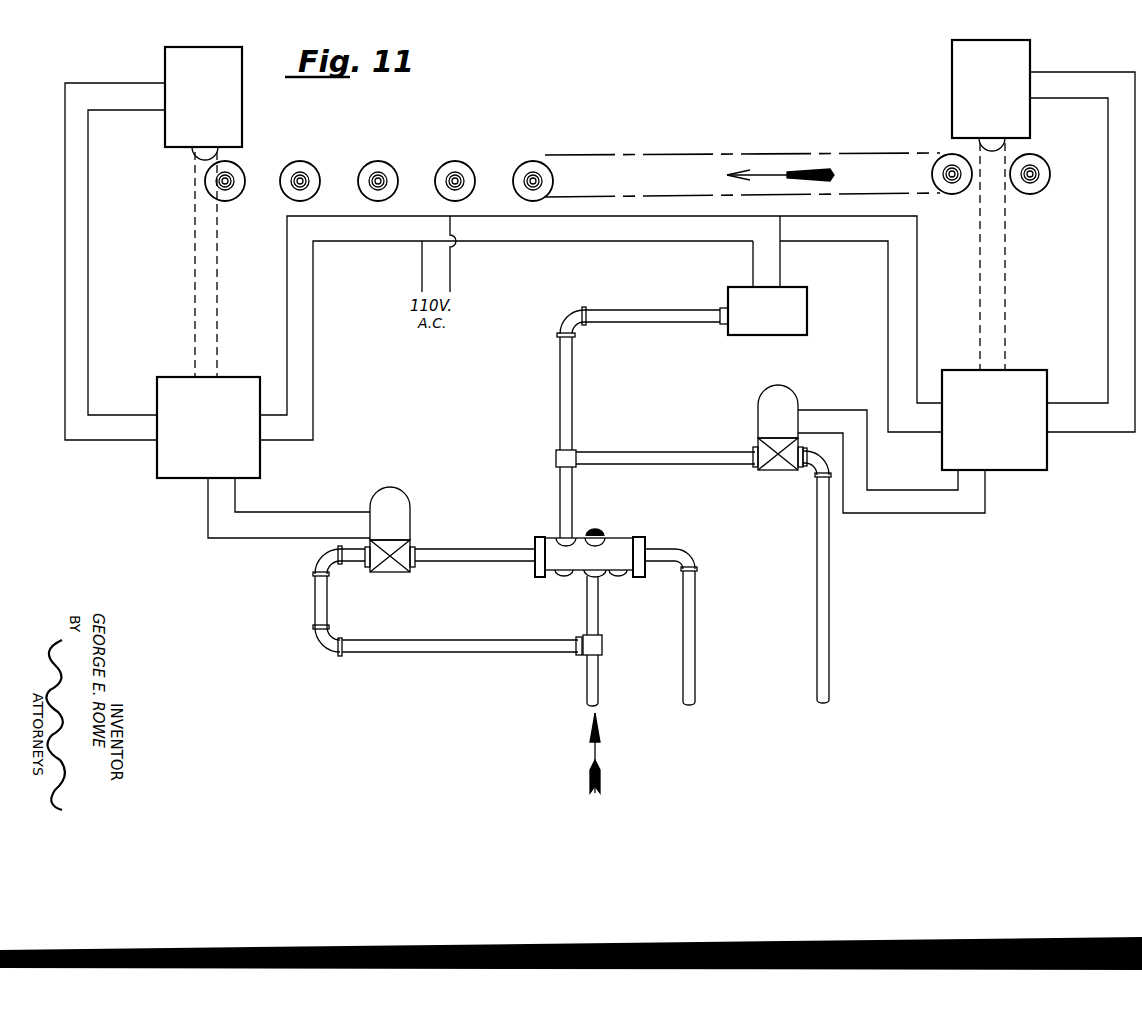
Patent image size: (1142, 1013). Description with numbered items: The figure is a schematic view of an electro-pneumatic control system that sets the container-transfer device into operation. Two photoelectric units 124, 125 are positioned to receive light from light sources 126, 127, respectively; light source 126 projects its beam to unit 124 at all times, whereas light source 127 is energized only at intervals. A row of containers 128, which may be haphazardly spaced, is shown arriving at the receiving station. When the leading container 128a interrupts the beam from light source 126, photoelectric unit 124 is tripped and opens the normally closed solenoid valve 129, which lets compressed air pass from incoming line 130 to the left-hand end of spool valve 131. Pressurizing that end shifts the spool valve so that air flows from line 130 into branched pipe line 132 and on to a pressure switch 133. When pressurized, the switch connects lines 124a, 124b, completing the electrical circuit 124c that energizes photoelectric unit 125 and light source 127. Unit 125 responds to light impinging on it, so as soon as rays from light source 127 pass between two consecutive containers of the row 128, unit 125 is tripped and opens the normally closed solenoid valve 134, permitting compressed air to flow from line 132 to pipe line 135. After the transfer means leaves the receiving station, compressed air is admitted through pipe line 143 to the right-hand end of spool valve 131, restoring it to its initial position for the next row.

The photoelectric unit 124 is at (160, 466).
The photoelectric unit 125 is at (1035, 458).
The light source 126 is at (243, 108).
The light source 127 is at (950, 91).
The row of containers 128 is at (313, 171).
The leading container 128a is at (243, 173).
The solenoid valve 129 is at (398, 520).
The incoming line 130 is at (590, 689).
The spool valve 131 is at (636, 538).
The branched pipe line 132 is at (573, 497).
The pressure switch 133 is at (808, 310).
The solenoid valve 134 is at (772, 465).
The pipe line 135 is at (829, 576).
The pipe line 143 is at (690, 655).
The line 124a is at (752, 258).
The line 124b is at (783, 258).
The electrical circuit 124c is at (560, 218).